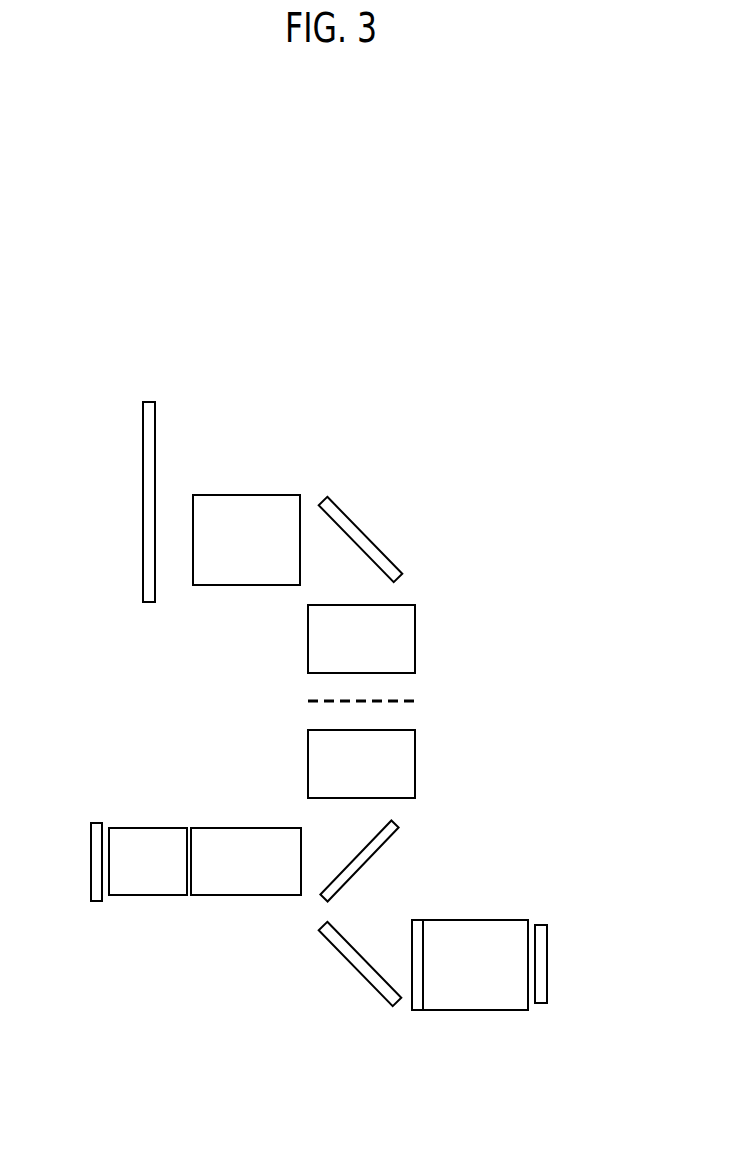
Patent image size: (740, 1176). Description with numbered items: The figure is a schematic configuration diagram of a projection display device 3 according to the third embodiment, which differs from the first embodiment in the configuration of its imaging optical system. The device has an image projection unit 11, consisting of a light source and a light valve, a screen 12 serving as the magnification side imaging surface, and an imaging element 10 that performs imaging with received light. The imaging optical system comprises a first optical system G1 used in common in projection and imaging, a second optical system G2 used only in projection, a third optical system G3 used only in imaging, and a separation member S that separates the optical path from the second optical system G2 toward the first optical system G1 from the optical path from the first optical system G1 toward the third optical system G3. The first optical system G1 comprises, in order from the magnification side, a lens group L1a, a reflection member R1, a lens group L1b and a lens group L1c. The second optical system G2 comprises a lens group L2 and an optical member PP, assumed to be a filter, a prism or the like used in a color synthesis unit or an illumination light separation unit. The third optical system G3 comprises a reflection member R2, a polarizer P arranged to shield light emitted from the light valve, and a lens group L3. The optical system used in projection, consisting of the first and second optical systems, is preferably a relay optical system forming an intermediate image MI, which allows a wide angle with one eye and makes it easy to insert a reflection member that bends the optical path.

The projection display device 3 is at (379, 365).
The imaging element 10 is at (548, 985).
The image projection unit 11 is at (95, 878).
The screen 12 is at (148, 543).
The first optical system G1 is at (607, 422).
The lens group L1a is at (268, 495).
The reflection member R1 is at (373, 543).
The lens group L1b is at (415, 637).
The intermediate image MI is at (305, 701).
The lens group L1c is at (415, 762).
The second optical system G2 is at (267, 979).
The optical member PP is at (147, 895).
The lens group L2 is at (243, 895).
The separation member S is at (378, 852).
The third optical system G3 is at (495, 1094).
The reflection member R2 is at (360, 972).
The polarizer P is at (417, 1010).
The lens group L3 is at (473, 1010).